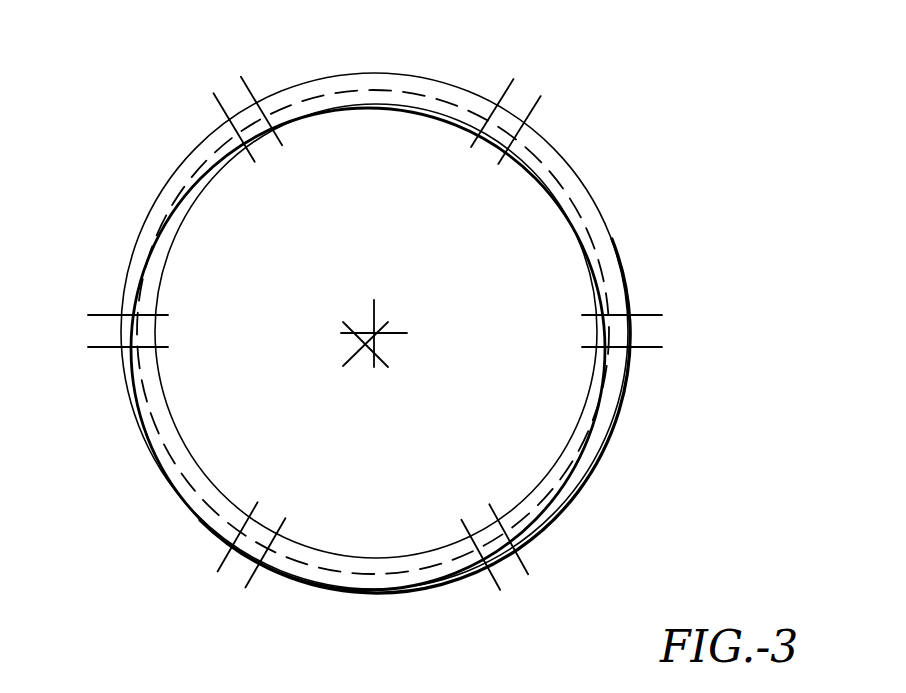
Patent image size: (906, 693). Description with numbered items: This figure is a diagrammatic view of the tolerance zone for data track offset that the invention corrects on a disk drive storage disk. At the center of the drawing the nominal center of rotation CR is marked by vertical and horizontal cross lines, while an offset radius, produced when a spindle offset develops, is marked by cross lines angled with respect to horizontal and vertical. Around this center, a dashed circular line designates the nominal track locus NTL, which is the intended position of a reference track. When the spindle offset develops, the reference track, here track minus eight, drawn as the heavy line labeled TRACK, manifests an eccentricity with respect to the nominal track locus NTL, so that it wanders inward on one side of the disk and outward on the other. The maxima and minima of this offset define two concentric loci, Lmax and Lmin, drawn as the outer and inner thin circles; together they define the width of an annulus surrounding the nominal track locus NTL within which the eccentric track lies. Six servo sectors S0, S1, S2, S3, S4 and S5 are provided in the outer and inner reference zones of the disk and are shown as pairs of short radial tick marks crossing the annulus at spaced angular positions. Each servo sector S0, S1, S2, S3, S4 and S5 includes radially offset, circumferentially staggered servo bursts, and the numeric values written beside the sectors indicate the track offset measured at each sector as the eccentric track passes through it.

The maximum offset locus Lmax is at (583, 190).
The minimum offset locus Lmin is at (557, 210).
The nominal track locus NTL is at (606, 222).
The reference track TRACK is at (602, 362).
The nominal center of rotation CR is at (377, 331).
The servo sector S0 is at (97, 330).
The servo sector S1 is at (243, 93).
The servo sector S2 is at (520, 99).
The servo sector S3 is at (647, 337).
The servo sector S4 is at (516, 571).
The servo sector S5 is at (246, 572).